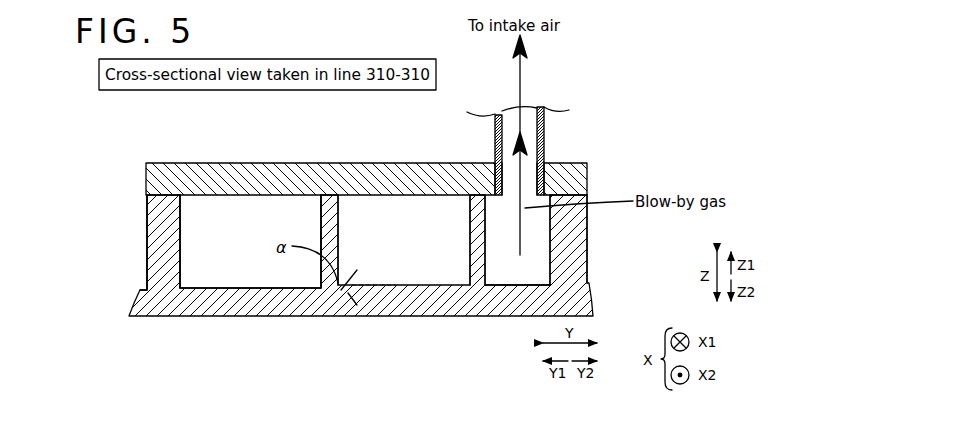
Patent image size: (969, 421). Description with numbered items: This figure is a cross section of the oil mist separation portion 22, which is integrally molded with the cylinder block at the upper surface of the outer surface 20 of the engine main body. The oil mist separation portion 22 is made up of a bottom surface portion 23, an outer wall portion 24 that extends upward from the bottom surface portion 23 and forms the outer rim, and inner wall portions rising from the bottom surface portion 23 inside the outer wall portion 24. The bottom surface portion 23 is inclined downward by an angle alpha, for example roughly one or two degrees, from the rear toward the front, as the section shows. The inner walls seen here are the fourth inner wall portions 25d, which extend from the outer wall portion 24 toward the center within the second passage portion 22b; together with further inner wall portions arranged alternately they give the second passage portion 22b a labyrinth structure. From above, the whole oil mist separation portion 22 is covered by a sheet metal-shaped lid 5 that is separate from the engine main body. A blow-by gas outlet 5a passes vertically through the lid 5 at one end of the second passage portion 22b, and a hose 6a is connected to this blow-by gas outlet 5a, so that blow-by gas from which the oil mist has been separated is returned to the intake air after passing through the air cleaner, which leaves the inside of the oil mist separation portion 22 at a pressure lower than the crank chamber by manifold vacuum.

The outer surface 20 is at (138, 286).
The oil mist separation portion 22 is at (139, 221).
The second passage portion 22b is at (507, 287).
The bottom surface portion 23 is at (245, 283).
The outer wall portion 24 is at (166, 203).
The fourth inner wall portion 25d is at (331, 233).
The lid 5 is at (398, 183).
The blow-by gas outlet 5a is at (545, 163).
The hose 6a is at (497, 115).